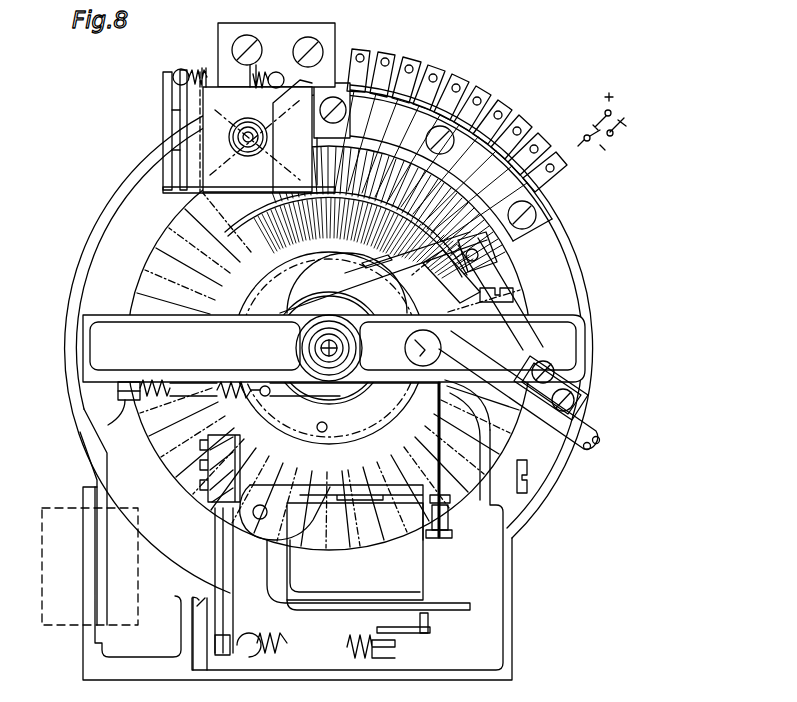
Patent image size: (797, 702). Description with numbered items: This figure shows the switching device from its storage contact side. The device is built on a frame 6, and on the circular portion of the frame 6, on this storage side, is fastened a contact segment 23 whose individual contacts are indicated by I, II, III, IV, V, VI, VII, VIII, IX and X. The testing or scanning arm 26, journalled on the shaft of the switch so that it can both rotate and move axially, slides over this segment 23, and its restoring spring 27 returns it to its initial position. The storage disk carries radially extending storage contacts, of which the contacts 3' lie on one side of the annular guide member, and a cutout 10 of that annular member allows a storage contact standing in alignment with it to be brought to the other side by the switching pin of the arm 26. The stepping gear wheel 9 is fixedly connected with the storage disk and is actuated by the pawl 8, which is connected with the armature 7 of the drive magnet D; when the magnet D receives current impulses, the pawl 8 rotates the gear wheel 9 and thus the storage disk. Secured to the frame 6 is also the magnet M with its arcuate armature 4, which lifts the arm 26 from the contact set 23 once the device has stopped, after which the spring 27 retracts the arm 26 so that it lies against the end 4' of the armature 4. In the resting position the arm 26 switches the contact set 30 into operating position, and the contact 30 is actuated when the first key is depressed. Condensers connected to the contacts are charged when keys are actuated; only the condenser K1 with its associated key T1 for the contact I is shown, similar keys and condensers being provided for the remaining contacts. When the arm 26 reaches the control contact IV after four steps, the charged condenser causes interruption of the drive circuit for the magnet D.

The frame 6 is at (120, 213).
The pawl 8 is at (470, 465).
The contact segment 23 is at (396, 144).
The magnet M is at (233, 118).
The arcuate armature 4 is at (333, 278).
The stepping gear wheel 9 is at (430, 350).
The restoring spring 27 is at (140, 403).
The testing or scanning arm 26 is at (355, 293).
The cutout 10 is at (520, 260).
The storage contacts 3' is at (509, 276).
The end of the armature 4' is at (549, 294).
The contact set 30 is at (525, 345).
The armature 7 is at (455, 515).
The magnet D is at (420, 572).
The condenser K1 is at (602, 119).
The key T1 is at (598, 157).
The contact I is at (505, 191).
The contact II is at (492, 176).
The contact III is at (478, 163).
The control contact IV is at (463, 151).
The contact V is at (446, 141).
The contact VI is at (428, 132).
The contact VII is at (410, 125).
The contact VIII is at (391, 119).
The contact IX is at (371, 115).
The contact X is at (352, 112).